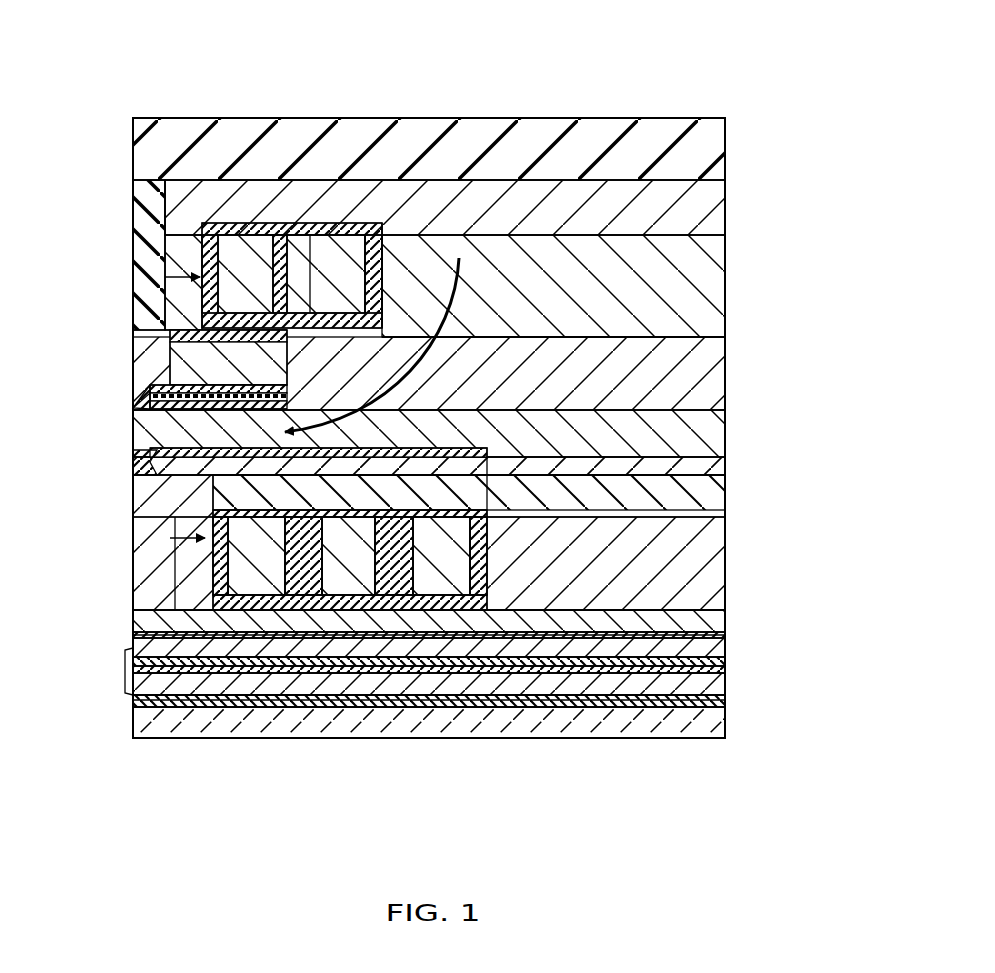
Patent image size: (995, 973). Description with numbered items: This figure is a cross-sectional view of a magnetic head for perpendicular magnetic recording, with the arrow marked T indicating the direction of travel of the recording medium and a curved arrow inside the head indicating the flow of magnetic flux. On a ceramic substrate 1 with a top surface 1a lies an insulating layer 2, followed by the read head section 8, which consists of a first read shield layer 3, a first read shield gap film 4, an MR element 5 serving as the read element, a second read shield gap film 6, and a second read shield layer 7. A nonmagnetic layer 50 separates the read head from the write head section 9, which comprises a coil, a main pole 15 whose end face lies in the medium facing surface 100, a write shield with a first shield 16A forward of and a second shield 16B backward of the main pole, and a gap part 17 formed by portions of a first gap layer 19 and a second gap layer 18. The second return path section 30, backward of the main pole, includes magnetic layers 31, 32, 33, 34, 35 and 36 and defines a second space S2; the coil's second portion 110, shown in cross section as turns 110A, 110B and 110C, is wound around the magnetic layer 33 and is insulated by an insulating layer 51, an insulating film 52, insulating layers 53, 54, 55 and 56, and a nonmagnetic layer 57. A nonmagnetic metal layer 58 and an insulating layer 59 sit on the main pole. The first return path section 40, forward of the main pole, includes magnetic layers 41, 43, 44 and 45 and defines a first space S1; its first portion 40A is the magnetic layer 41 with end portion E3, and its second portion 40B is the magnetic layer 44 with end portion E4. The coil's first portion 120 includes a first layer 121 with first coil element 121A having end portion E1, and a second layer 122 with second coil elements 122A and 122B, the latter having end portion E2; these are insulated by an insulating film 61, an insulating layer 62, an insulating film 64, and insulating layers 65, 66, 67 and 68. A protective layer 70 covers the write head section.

The substrate 1 is at (148, 730).
The top surface 1a is at (712, 700).
The insulating layer 2 is at (175, 704).
The first read shield layer 3 is at (200, 700).
The first read shield gap film 4 is at (492, 684).
The magnetoresistive (MR) element 5 is at (150, 700).
The second read shield gap film 6 is at (522, 673).
The second read shield layer 7 is at (550, 666).
The read head section 8 is at (125, 670).
The write head section 9 is at (145, 397).
The main pole 15 is at (712, 466).
The first shield 16A is at (170, 380).
The second shield 16B is at (140, 463).
The gap part 17 is at (84, 417).
The second gap layer 18 is at (145, 412).
The first gap layer 19 is at (140, 402).
The second return path section 30 is at (712, 661).
The magnetic layer 31 is at (712, 635).
The magnetic layer 32 is at (150, 585).
The magnetic layer 33 is at (712, 602).
The magnetic layer 34 is at (205, 517).
The magnetic layer 35 is at (712, 498).
The magnetic layer 36 is at (487, 453).
The first return path section 40 is at (668, 175).
The first portion 40A is at (492, 405).
The second portion 40B is at (616, 281).
The magnetic layer 41 is at (712, 403).
The magnetic layer 43 is at (170, 292).
The magnetic layer 44 is at (712, 316).
The magnetic layer 45 is at (727, 207).
The nonmagnetic layer 50 is at (582, 703).
The insulating layer 51 is at (160, 636).
The insulating film 52 is at (387, 593).
The insulating layer 53 is at (295, 593).
The insulating layer 54 is at (165, 612).
The insulating layer 55 is at (480, 550).
The insulating layer 56 is at (480, 513).
The nonmagnetic layer 57 is at (150, 495).
The nonmagnetic metal layer 58 is at (165, 350).
The insulating layer 59 is at (172, 330).
The insulating film 61 is at (287, 376).
The insulating layer 62 is at (382, 292).
The insulating film 64 is at (160, 200).
The insulating layer 65 is at (340, 228).
The insulating layer 66 is at (160, 222).
The insulating layer 67 is at (200, 245).
The insulating layer 68 is at (135, 182).
The protective layer 70 is at (727, 126).
The medium facing surface 100 is at (128, 156).
The second portion 110 is at (478, 560).
The first gate electrode layer 110A is at (255, 593).
The second gate electrode layer 110B is at (340, 593).
The third gate electrode layer 110C is at (445, 593).
The first portion 120 is at (385, 263).
The first layer 121 is at (519, 361).
The first coil element 121A is at (275, 352).
The second layer 122 is at (305, 178).
The second coil element 122A is at (235, 250).
The second coil element 122B is at (340, 280).
The end portion E1 is at (274, 300).
The end portion E2 is at (367, 300).
The end portion E3 is at (289, 300).
The end portion E4 is at (384, 300).
The first space S1 is at (165, 277).
The second space S2 is at (170, 538).
The direction of travel of the recording medium T is at (100, 118).